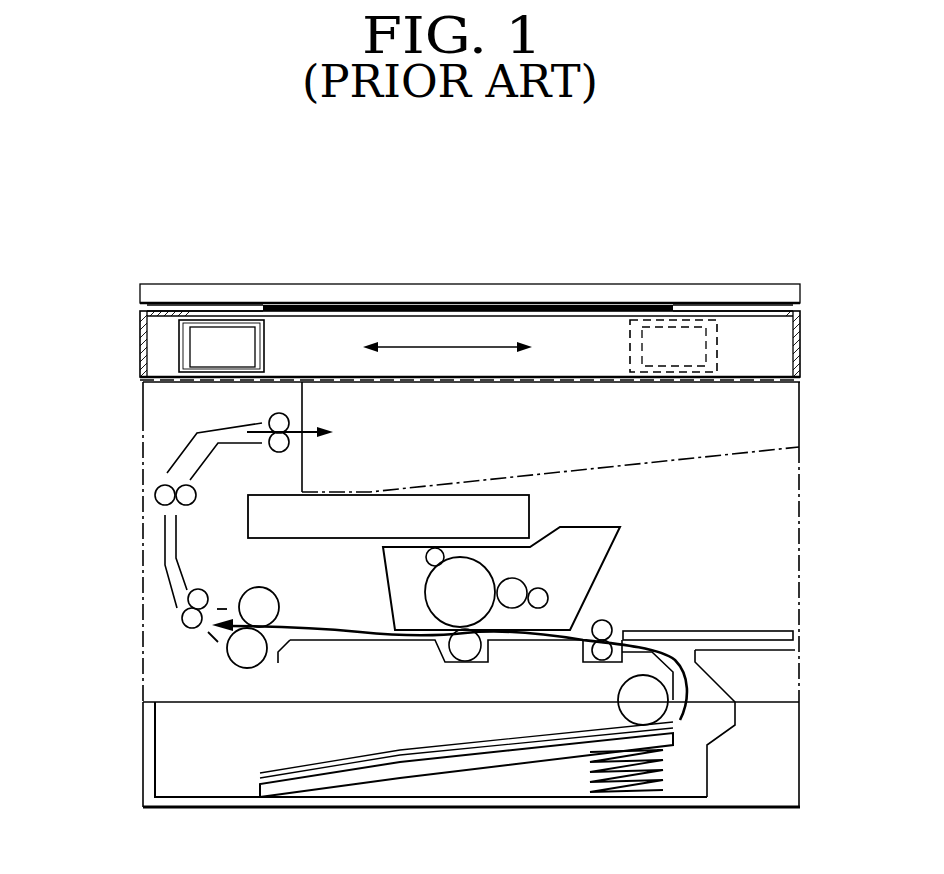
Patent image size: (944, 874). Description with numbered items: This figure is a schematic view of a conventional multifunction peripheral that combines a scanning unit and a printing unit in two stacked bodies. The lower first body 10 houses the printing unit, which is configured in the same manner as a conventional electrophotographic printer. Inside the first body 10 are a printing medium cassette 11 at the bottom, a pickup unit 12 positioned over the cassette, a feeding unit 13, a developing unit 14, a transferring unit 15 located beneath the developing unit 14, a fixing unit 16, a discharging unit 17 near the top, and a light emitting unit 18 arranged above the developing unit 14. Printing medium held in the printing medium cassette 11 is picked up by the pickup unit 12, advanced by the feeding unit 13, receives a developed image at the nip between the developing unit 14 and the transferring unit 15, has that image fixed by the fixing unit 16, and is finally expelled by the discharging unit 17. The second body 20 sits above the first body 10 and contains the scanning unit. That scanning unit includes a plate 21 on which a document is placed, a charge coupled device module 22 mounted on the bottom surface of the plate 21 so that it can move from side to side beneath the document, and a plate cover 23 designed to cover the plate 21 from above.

The first body 10 is at (124, 807).
The printing medium cassette 11 is at (520, 775).
The pickup unit 12 is at (640, 713).
The feeding unit 13 is at (612, 621).
The developing unit 14 is at (620, 527).
The transferring unit 15 is at (465, 655).
The fixing unit 16 is at (240, 662).
The discharging unit 17 is at (282, 418).
The light emitting unit 18 is at (422, 505).
The second body 20 is at (124, 283).
The plate 21 is at (267, 308).
The charge coupled device (CCD) module 22 is at (205, 340).
The plate cover 23 is at (444, 296).